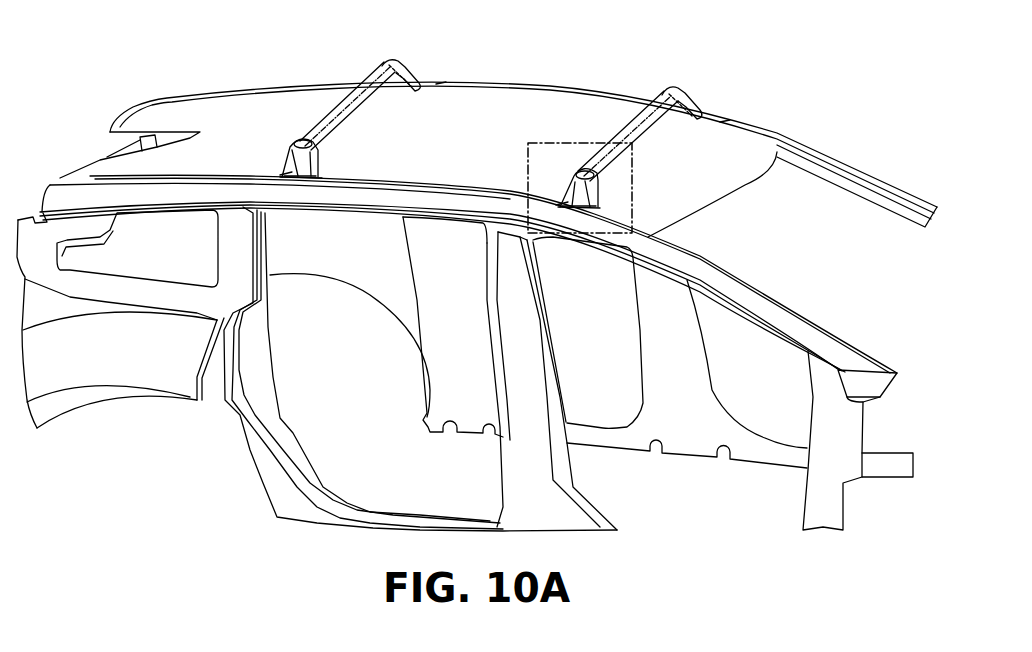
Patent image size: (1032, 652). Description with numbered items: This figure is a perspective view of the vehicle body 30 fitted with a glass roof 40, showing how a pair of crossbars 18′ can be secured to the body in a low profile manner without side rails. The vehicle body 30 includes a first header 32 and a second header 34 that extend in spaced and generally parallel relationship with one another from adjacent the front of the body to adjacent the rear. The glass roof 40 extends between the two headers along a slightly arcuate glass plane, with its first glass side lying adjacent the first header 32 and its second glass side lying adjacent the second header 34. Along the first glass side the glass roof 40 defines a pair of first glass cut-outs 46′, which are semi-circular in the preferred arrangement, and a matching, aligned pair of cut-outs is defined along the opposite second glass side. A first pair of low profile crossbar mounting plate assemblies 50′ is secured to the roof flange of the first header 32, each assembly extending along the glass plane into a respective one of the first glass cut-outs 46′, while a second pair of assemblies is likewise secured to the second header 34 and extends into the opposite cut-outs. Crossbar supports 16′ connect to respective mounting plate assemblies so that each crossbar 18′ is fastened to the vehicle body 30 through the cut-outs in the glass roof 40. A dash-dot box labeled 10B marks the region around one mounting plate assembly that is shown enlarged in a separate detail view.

The vehicle body 30 is at (846, 80).
The first header 32 is at (92, 195).
The second header 34 is at (248, 88).
The glass roof 40 is at (490, 112).
The mounting bracket 16′ is at (319, 160).
The crossbar 18′ is at (365, 88).
The first glass cut-outs 46′ is at (278, 174).
The first pair of LPCMP assemblies 50′ is at (302, 179).
The detail region of FIG. 10B is at (576, 143).